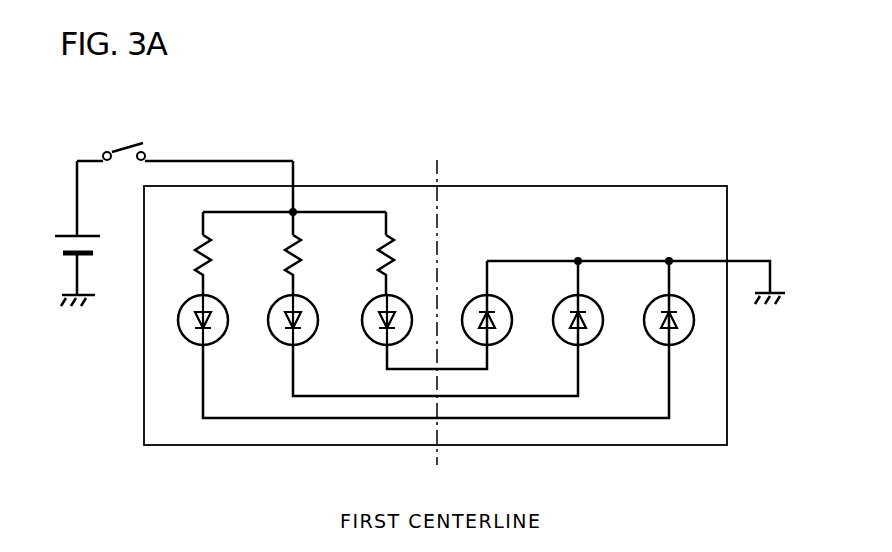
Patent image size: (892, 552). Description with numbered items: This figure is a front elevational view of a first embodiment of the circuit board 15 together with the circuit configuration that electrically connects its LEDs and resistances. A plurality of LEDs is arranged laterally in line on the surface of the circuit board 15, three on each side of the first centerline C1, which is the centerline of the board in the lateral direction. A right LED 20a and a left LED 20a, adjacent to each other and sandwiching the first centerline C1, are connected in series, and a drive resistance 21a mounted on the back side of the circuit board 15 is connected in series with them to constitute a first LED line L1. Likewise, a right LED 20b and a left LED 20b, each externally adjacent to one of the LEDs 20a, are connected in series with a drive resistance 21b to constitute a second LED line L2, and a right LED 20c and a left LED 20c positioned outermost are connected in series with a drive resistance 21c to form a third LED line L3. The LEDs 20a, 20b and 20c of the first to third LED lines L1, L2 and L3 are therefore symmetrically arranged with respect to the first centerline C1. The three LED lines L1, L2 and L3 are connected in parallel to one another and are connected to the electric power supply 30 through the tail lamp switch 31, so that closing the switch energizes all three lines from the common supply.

The circuit board 15 is at (712, 192).
The electric power supply 30 is at (66, 228).
The tail lamp switch 31 is at (123, 140).
The drive resistance 21a is at (402, 250).
The drive resistance 21b is at (305, 255).
The drive resistance 21c is at (190, 258).
The first LED line L1 is at (494, 284).
The second LED line L2 is at (590, 283).
The third LED line L3 is at (652, 283).
The LED 20a is at (375, 348).
The LED 20b is at (282, 347).
The LED 20c is at (190, 347).
The first centerline C1 is at (436, 332).